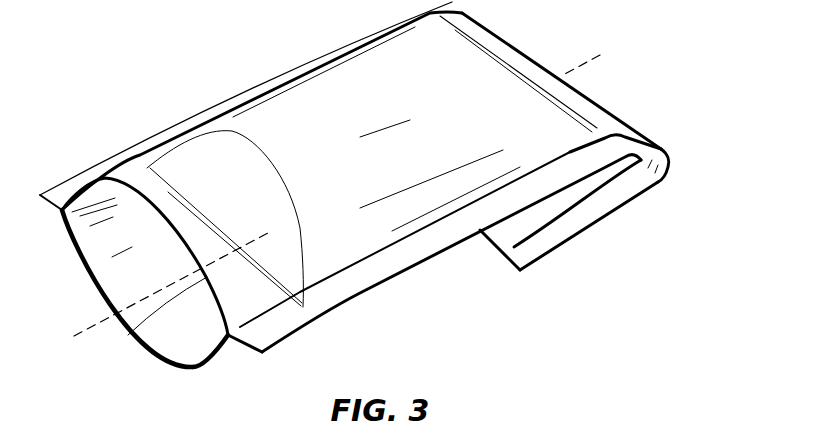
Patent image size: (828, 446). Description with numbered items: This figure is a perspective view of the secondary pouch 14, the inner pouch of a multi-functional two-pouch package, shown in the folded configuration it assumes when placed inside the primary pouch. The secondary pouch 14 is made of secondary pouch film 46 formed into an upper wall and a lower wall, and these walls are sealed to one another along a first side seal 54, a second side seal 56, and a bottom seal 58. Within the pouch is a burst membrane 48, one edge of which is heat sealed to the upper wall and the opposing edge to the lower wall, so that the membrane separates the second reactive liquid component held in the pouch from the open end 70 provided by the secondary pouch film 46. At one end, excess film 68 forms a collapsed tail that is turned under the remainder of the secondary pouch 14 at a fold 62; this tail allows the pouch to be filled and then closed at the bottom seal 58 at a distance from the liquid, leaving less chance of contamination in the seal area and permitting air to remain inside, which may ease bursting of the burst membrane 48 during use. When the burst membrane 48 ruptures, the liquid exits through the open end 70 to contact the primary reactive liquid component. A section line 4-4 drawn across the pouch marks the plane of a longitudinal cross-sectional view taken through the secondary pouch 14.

The secondary pouch 14 is at (214, 92).
The first side seal 54 is at (290, 64).
The secondary pouch film 46 is at (130, 172).
The burst membrane 48 is at (128, 335).
The open end 70 is at (185, 344).
The second side seal 56 is at (352, 281).
The bottom seal 58 is at (517, 259).
The excess film 68 is at (592, 230).
The fold 62 is at (670, 163).
The section line 4 is at (73, 335).